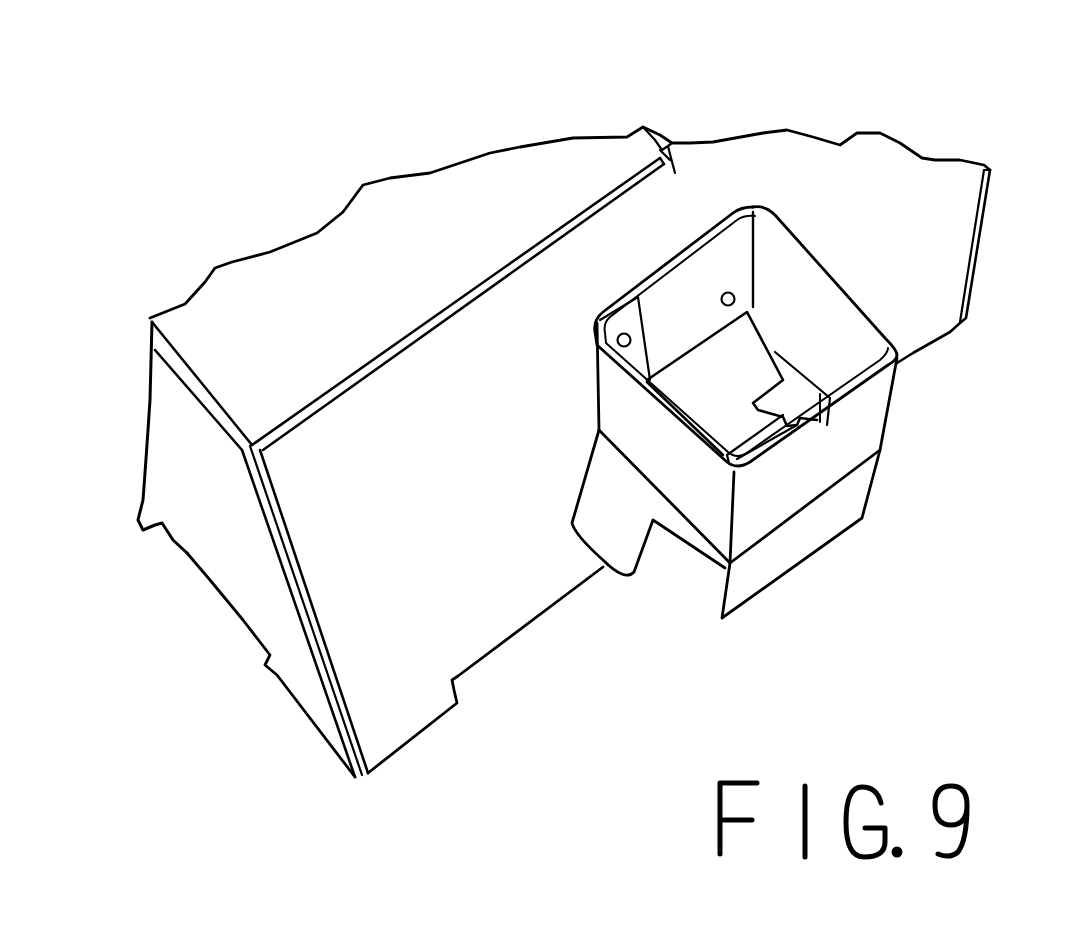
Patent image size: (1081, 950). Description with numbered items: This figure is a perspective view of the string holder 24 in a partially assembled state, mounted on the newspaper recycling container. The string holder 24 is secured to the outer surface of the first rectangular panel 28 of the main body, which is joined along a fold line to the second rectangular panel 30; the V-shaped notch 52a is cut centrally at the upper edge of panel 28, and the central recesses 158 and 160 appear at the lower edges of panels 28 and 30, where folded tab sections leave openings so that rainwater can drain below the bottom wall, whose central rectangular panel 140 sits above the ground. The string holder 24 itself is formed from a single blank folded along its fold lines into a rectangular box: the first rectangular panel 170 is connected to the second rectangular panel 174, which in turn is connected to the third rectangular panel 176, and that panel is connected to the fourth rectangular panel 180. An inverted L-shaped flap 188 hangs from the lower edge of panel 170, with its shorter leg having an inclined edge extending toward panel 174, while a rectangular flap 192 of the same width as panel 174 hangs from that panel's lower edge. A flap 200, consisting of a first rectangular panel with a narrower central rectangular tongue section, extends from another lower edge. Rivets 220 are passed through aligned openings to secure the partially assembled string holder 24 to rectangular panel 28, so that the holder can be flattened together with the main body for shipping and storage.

The string holder 24 is at (926, 408).
The first rectangular panel 28 is at (385, 730).
The second rectangular panel 30 is at (167, 447).
The V-shaped notch 52a is at (660, 127).
The central rectangular panel 140 is at (343, 253).
The central recess 158 is at (490, 657).
The central recess 160 is at (210, 588).
The first rectangular panel 170 is at (597, 383).
The second rectangular panel 174 is at (866, 428).
The third rectangular panel 176 is at (817, 297).
The fourth rectangular panel 180 is at (730, 240).
The inverted L-shaped flap 188 is at (613, 547).
The rectangular flap 192 is at (785, 570).
The flap 200 is at (732, 397).
The rivets 220 is at (730, 290).